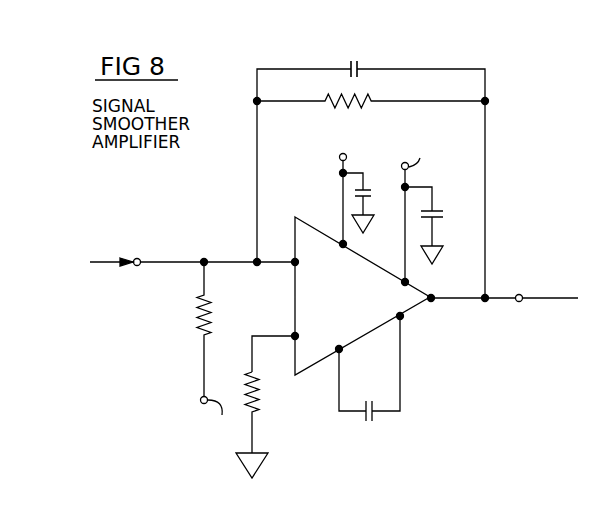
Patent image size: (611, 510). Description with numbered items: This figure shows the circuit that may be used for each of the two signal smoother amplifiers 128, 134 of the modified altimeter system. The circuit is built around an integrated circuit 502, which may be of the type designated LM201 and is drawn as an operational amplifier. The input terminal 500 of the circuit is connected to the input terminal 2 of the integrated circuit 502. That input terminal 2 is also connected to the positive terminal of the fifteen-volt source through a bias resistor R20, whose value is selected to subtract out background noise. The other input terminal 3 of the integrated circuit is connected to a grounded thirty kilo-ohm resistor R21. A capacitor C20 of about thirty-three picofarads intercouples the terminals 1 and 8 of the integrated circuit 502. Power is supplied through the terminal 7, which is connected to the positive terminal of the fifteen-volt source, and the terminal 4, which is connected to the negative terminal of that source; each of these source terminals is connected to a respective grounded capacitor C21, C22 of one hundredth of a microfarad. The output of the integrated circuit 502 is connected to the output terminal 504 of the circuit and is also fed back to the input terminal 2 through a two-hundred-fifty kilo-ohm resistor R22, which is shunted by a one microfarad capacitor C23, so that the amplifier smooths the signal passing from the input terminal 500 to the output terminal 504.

The signal smoother amplifier 128 is at (334, 258).
The signal smoother amplifier 134 is at (334, 258).
The input terminal 500 is at (138, 266).
The integrated circuit 502 is at (310, 355).
The output terminal 504 is at (520, 302).
The bias resistor R20 is at (198, 320).
The grounded resistor R21 is at (262, 392).
The feedback resistor R22 is at (361, 100).
The capacitor C20 is at (372, 424).
The grounded capacitor C21 is at (397, 183).
The grounded capacitor C22 is at (438, 207).
The shunt capacitor C23 is at (355, 62).
The terminal 1 is at (339, 339).
The input terminal 2 is at (302, 269).
The input terminal 3 is at (301, 335).
The terminal 4 is at (398, 287).
The terminal 7 is at (341, 254).
The terminal 8 is at (392, 309).